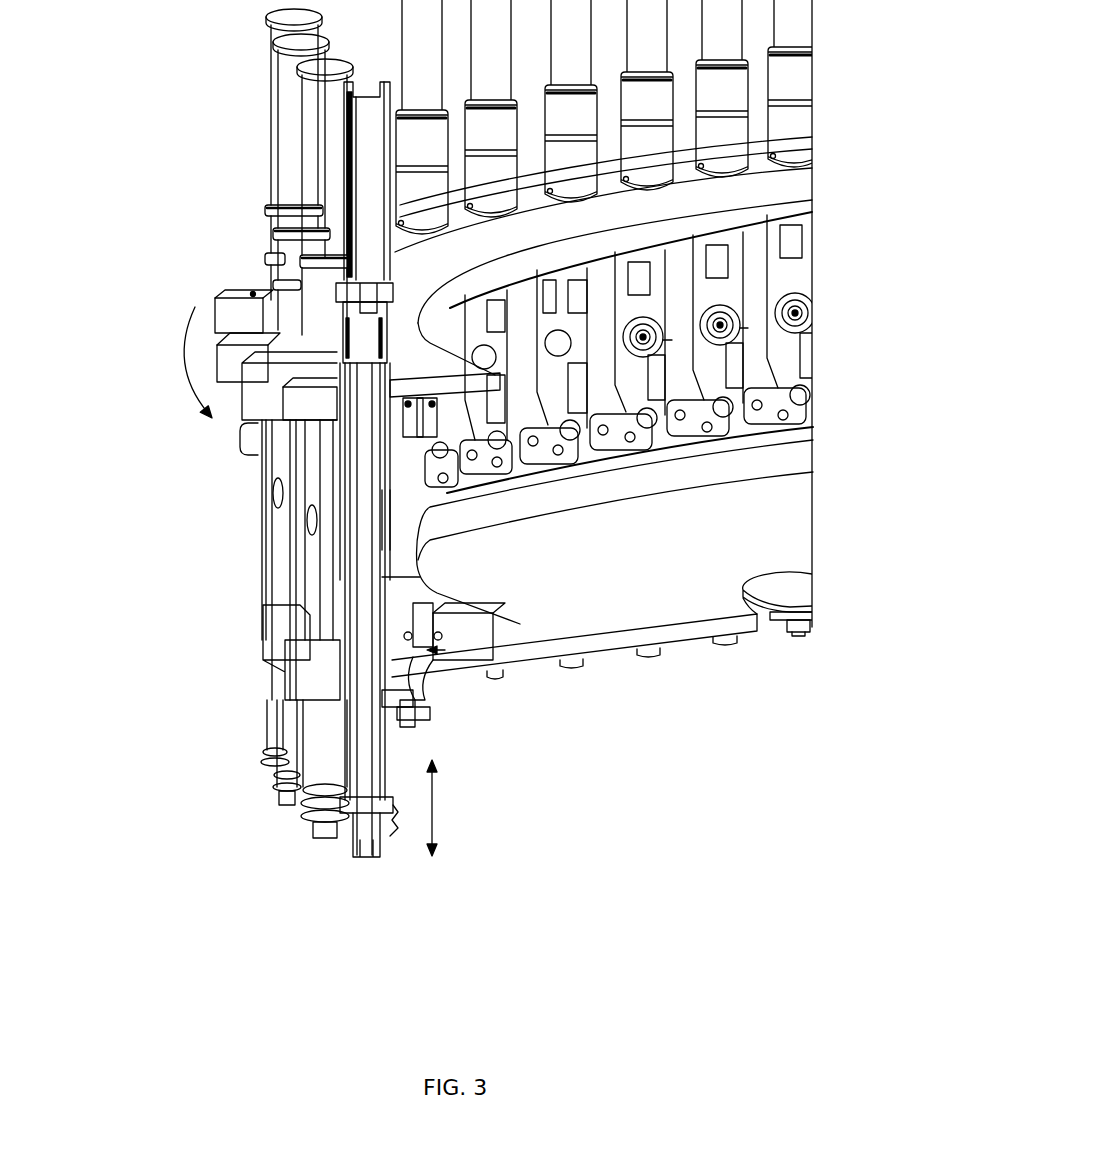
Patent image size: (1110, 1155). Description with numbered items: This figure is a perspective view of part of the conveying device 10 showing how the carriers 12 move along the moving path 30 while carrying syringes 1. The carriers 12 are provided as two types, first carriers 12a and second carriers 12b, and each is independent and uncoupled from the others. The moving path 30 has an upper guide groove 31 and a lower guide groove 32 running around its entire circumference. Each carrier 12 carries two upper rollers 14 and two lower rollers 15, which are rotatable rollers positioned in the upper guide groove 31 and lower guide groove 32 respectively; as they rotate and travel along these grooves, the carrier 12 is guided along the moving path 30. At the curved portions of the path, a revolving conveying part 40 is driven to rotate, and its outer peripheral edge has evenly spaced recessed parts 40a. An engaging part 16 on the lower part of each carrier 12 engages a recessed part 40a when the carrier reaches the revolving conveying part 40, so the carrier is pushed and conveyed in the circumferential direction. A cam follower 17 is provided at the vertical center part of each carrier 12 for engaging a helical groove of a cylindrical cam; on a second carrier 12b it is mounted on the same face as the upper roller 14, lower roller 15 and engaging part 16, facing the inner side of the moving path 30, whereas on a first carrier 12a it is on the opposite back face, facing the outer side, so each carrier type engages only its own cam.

The syringe 1 is at (316, 132).
The conveying device 10 is at (436, 443).
The carrier 12 is at (501, 564).
The first carrier 12a is at (240, 485).
The second carrier 12b is at (465, 535).
The upper roller 14 is at (399, 388).
The lower roller 15 is at (518, 468).
The engaging part 16 is at (430, 673).
The cam follower 17 is at (250, 441).
The moving path 30 is at (490, 643).
The upper guide groove 31 is at (416, 397).
The lower guide groove 32 is at (425, 680).
The revolving conveying part 40 is at (455, 668).
The recessed part 40a is at (427, 668).